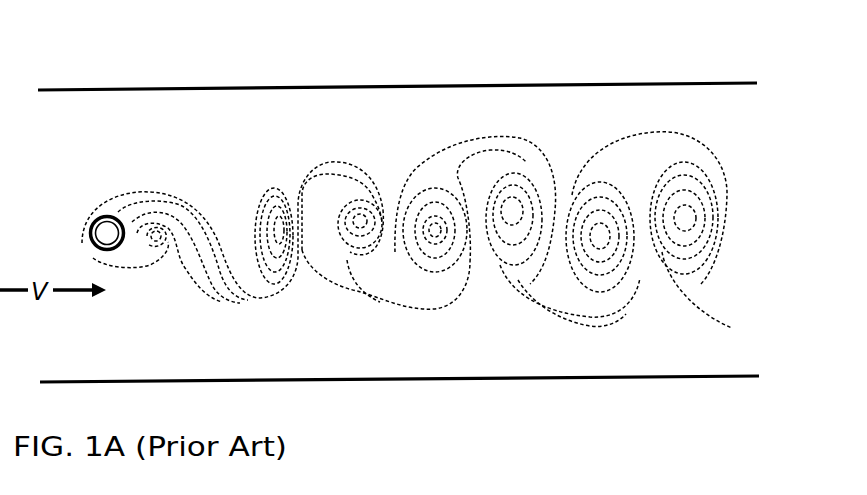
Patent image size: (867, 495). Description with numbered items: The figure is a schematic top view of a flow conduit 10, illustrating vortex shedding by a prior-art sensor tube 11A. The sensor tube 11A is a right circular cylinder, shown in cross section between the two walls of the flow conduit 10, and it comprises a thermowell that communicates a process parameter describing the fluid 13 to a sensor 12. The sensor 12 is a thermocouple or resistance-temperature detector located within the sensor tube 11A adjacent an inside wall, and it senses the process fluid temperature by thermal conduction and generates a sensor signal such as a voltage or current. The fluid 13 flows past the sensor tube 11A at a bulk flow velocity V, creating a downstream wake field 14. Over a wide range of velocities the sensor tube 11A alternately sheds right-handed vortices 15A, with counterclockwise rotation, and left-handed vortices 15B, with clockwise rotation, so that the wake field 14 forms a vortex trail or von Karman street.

The flow conduit 10 is at (114, 88).
The sensor tube 11A is at (92, 223).
The sensor 12 is at (106, 216).
The fluid 13 is at (344, 127).
The wake field 14 is at (746, 134).
The right-handed vortices 15A is at (274, 229).
The left-handed vortices 15B is at (359, 230).